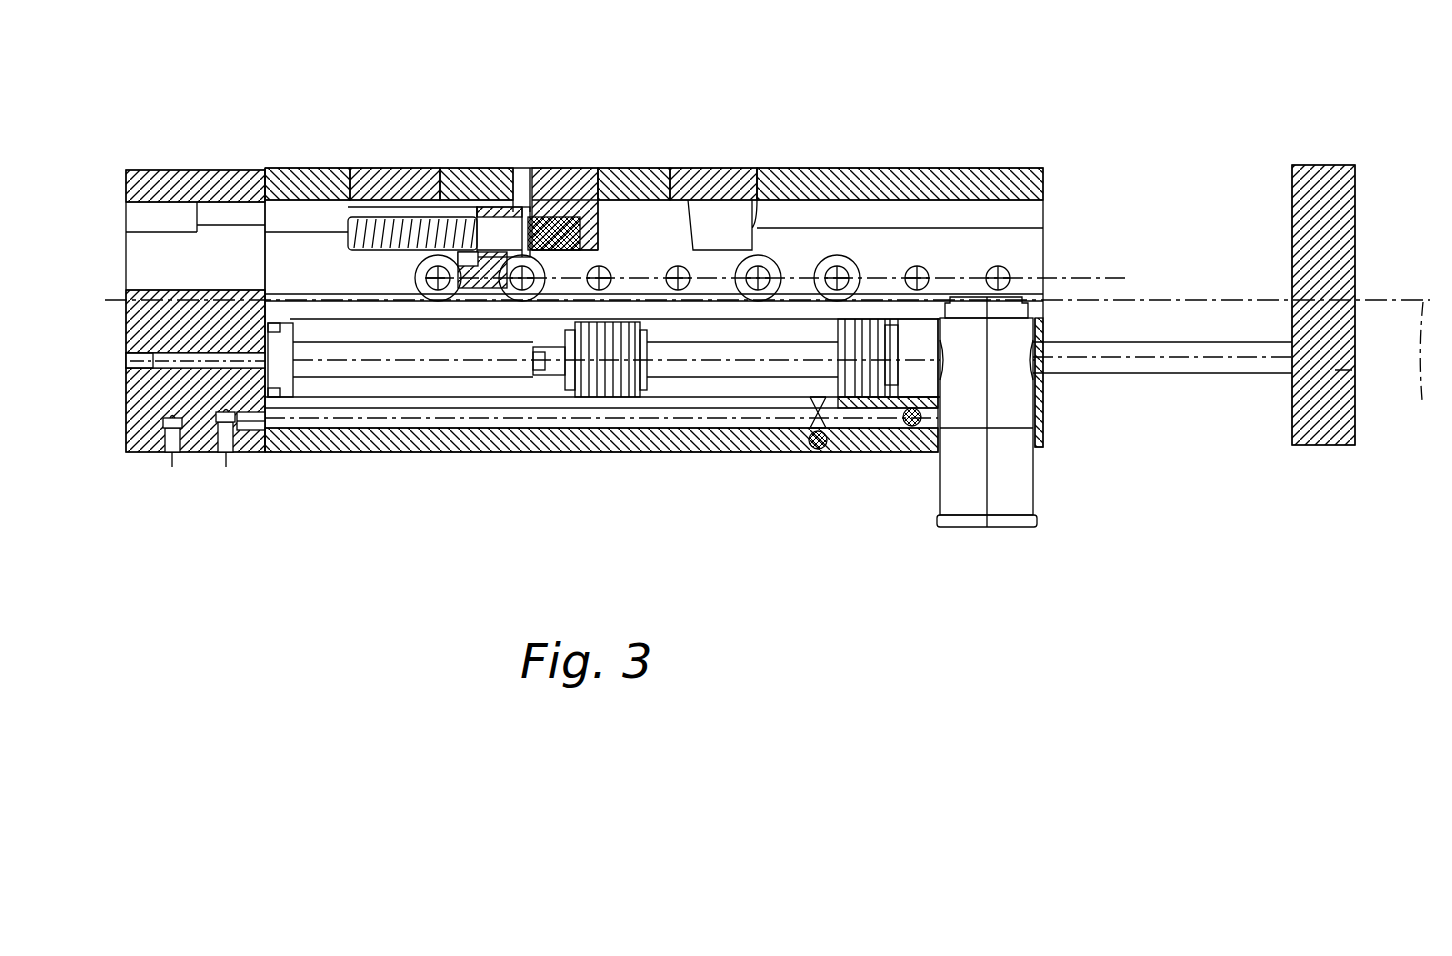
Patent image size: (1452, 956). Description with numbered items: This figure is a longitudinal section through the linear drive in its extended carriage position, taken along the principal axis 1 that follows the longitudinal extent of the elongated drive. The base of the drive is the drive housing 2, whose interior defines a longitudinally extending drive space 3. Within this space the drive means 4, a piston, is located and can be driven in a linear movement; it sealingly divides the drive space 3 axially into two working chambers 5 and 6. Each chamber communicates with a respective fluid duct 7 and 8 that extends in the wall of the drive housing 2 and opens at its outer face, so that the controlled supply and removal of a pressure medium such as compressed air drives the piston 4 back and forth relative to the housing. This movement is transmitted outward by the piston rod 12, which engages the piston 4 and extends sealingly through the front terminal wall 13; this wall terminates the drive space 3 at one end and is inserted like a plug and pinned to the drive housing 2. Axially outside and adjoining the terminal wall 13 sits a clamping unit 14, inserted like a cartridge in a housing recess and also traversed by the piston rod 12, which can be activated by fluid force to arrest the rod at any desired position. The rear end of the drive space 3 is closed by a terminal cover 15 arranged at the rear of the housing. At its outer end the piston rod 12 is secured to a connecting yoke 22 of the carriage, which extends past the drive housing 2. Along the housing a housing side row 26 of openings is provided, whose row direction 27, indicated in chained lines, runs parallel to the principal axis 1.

The principal axis 1 is at (1423, 302).
The drive housing 2 is at (805, 175).
The drive space 3 is at (388, 392).
The drive means 4 is at (605, 390).
The working chamber 5 is at (697, 385).
The working chamber 6 is at (452, 392).
The fluid duct 7 is at (318, 425).
The fluid duct 8 is at (158, 372).
The piston rod 12 is at (1148, 365).
The front terminal wall 13 is at (876, 380).
The clamping unit 14 is at (1022, 494).
The terminal cover 15 is at (188, 178).
The connecting yoke 22 is at (1315, 180).
The housing side row of openings 26 is at (1022, 268).
The row direction 27 is at (1130, 278).